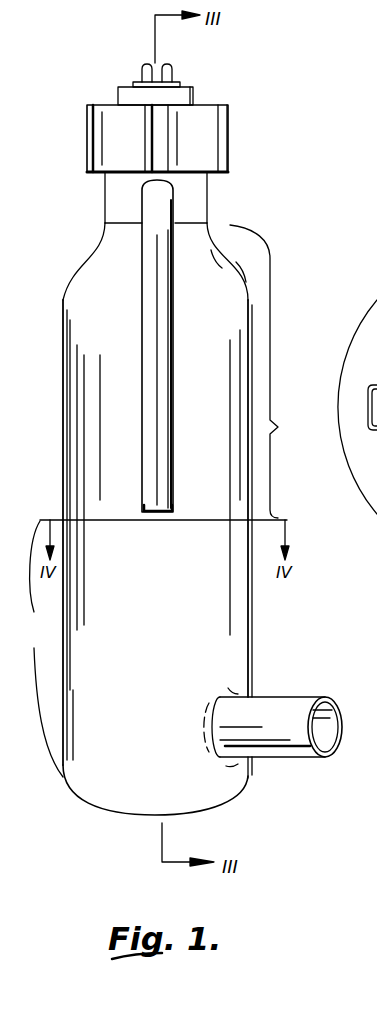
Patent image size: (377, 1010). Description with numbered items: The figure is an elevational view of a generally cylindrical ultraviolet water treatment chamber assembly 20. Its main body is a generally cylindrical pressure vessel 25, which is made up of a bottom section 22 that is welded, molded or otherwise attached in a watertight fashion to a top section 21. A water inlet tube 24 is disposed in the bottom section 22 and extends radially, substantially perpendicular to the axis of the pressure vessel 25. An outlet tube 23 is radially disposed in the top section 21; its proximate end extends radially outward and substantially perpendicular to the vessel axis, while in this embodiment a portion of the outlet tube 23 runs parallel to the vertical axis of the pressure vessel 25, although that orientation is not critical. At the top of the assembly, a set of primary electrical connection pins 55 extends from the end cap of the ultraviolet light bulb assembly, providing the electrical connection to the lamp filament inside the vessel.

The ultraviolet water treatment chamber assembly 20 is at (256, 228).
The top section 21 is at (269, 371).
The bottom section 22 is at (40, 649).
The outlet tube 23 is at (153, 380).
The water inlet tube 24 is at (287, 710).
The pressure vessel 25 is at (82, 310).
The primary electrical connection pins 55 is at (148, 63).